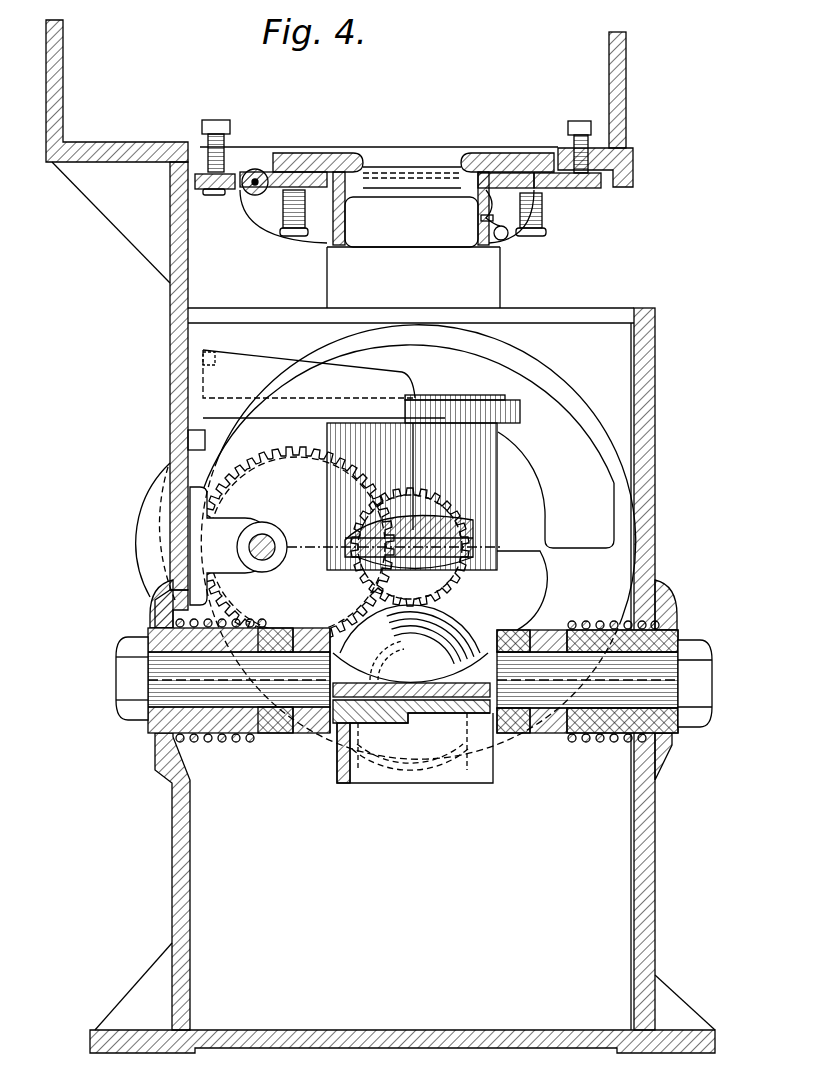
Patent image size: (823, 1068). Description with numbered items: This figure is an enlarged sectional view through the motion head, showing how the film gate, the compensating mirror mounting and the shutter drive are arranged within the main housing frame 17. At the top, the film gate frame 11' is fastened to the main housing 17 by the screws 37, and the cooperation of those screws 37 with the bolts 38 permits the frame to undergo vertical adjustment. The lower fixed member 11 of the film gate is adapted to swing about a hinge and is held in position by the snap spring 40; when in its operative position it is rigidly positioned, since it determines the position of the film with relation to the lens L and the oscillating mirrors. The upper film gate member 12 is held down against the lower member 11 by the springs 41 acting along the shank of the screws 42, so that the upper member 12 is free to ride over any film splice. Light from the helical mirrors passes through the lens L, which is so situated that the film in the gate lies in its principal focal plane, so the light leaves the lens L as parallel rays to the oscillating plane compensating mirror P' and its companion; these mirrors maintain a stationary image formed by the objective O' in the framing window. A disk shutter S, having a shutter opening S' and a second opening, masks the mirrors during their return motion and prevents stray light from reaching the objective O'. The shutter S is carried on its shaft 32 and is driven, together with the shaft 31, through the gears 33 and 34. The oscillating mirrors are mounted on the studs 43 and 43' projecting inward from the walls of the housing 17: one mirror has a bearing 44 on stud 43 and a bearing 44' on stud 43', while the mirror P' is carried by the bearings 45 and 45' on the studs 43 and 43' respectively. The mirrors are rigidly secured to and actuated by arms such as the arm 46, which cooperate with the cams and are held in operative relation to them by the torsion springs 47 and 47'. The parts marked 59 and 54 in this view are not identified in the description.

The main housing frame 17 is at (633, 165).
The bolts 38 is at (217, 123).
The hinge pin 59 is at (257, 168).
The upper film gate member 12 is at (355, 158).
The screws 37 is at (210, 190).
The lower fixed member of the film gate 11 is at (413, 240).
The film gate frame 11' is at (588, 204).
The springs 41 is at (283, 205).
The screws 42 is at (293, 236).
The snap spring 40 is at (503, 241).
The disk shutter S is at (418, 542).
The shutter opening S' is at (408, 446).
The lens L is at (465, 498).
The gear 33 is at (300, 462).
The gear 34 is at (380, 518).
The disc 54 is at (409, 542).
The shutter shaft 32 is at (410, 520).
The shaft 31 is at (262, 538).
The oscillating plane compensating mirror P' is at (411, 664).
The objective O' is at (430, 688).
The arm 46 is at (340, 784).
The stud 43 is at (213, 667).
The bearing 44 is at (275, 711).
The bearing 45 is at (307, 722).
The torsion spring 47' is at (221, 697).
The stud 43' is at (611, 663).
The bearing 44' is at (509, 727).
The bearing 45' is at (550, 716).
The torsion spring 47 is at (613, 700).